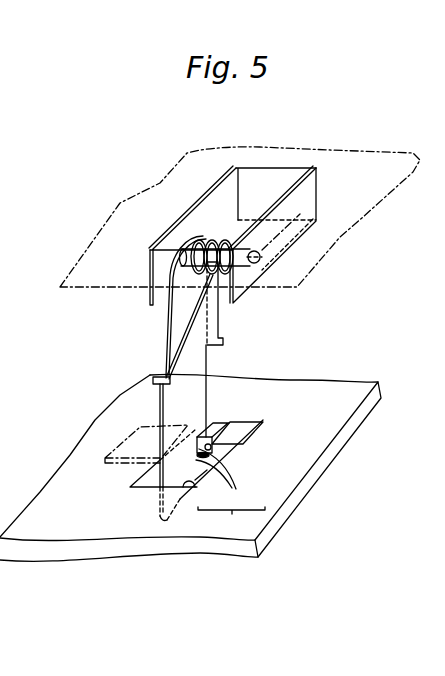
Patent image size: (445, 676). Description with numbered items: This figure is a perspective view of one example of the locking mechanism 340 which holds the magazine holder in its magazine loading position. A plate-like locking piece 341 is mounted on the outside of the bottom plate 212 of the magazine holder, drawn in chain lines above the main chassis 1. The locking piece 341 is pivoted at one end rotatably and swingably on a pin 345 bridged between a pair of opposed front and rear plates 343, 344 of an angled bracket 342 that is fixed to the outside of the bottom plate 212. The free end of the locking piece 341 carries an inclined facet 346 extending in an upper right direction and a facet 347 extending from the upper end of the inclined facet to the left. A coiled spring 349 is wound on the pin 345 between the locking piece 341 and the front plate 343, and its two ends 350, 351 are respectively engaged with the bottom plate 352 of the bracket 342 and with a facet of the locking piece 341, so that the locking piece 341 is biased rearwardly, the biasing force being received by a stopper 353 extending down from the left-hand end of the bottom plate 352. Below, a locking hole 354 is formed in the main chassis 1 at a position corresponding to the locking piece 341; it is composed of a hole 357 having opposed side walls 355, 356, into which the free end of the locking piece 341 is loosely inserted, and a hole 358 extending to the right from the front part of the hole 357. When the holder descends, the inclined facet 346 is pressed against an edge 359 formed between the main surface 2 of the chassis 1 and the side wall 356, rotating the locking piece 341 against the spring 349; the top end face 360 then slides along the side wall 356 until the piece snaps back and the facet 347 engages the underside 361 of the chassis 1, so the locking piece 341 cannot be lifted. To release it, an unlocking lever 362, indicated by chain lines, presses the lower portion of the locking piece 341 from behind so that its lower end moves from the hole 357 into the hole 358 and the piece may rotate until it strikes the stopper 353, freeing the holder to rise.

The main chassis 1 is at (331, 381).
The main surface 2 is at (362, 391).
The bottom plate 212 is at (396, 168).
The locking mechanism 340 is at (148, 339).
The locking piece 341 is at (160, 418).
The angled bracket 342 is at (194, 209).
The front plate 343 is at (314, 185).
The rear plate 344 is at (240, 180).
The pin 345 is at (256, 277).
The inclined facet 346 is at (179, 508).
The facet 347 is at (221, 458).
The coiled spring 349 is at (187, 323).
The end of coiled spring 350 is at (286, 247).
The end of coiled spring 351 is at (168, 373).
The bottom plate of bracket 352 is at (245, 220).
The stopper 353 is at (218, 328).
The locking hole 354 is at (302, 448).
The side wall 355 is at (204, 488).
The side wall 356 is at (228, 477).
The hole 357 is at (231, 517).
The hole 358 is at (247, 423).
The edge 359 is at (199, 436).
The top end face 360 is at (216, 462).
The underside of chassis 361 is at (306, 519).
The unlocking lever 362 is at (117, 464).